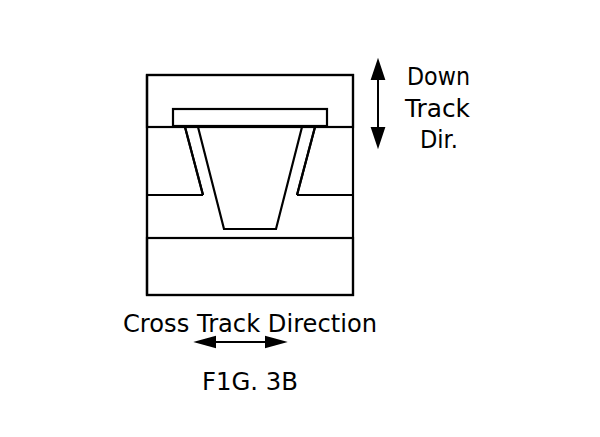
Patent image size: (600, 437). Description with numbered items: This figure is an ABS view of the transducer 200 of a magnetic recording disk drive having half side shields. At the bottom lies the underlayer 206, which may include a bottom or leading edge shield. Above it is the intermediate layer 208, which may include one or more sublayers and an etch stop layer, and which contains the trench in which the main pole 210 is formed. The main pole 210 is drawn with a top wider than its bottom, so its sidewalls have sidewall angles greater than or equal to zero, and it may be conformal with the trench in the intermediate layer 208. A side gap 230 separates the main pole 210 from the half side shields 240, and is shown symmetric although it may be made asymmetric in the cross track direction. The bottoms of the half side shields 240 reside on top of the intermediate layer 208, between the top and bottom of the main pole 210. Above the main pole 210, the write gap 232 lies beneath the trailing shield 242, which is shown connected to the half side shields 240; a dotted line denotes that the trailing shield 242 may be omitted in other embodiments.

The transducer 200 is at (273, 53).
The underlayer 206 is at (250, 266).
The intermediate layer 208 is at (116, 210).
The main pole 210 is at (250, 178).
The side gap 230 is at (299, 206).
The write gap 232 is at (173, 118).
The half side shields 240 is at (250, 161).
The trailing shield 242 is at (250, 101).